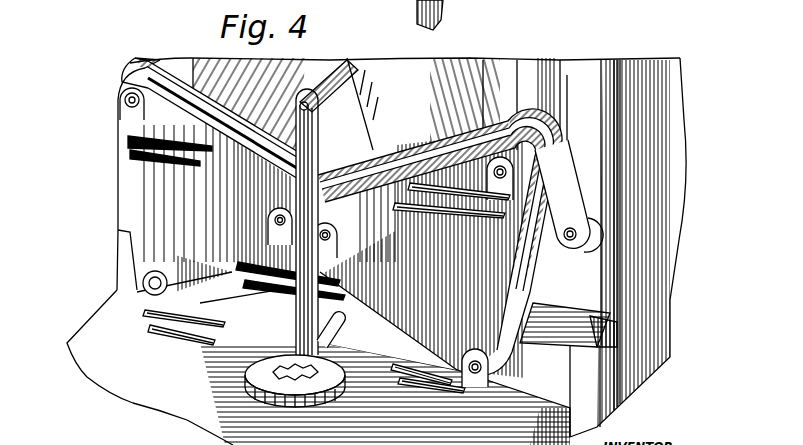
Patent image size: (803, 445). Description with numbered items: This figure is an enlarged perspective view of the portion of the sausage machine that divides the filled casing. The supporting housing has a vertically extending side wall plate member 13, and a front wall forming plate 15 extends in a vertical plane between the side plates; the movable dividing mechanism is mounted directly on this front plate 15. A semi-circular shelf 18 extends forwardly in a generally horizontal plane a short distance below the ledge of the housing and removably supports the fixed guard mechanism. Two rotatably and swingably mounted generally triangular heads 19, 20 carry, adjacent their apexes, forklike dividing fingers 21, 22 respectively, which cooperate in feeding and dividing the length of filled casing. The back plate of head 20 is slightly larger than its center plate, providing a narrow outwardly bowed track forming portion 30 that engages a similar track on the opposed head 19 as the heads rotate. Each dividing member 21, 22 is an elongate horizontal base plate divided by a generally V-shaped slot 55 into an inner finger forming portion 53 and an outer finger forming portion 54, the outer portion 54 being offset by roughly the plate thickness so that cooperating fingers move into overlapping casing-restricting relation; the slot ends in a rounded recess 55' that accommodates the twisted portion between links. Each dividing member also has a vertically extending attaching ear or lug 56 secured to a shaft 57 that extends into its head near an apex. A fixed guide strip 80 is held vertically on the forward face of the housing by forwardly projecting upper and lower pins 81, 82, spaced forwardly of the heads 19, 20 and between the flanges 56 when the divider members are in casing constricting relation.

The side wall plate member 13 is at (668, 183).
The front wall forming plate 15 is at (583, 66).
The semi-circular shelf 18 is at (92, 337).
The triangular head 19 is at (413, 301).
The triangular head 20 is at (235, 195).
The dividing finger 21 is at (340, 247).
The dividing finger 22 is at (150, 162).
The track forming portion 30 is at (166, 59).
The inner finger forming portion 53 is at (186, 148).
The outer finger forming portion 54 is at (196, 168).
The V-shaped slot 55 is at (107, 178).
The blade 55' is at (107, 161).
The attaching ear or lug 56 is at (128, 118).
The shaft 57 is at (124, 99).
The guide plate or strip 80 is at (310, 175).
The upper pin 81 is at (328, 88).
The lower pin 82 is at (307, 359).